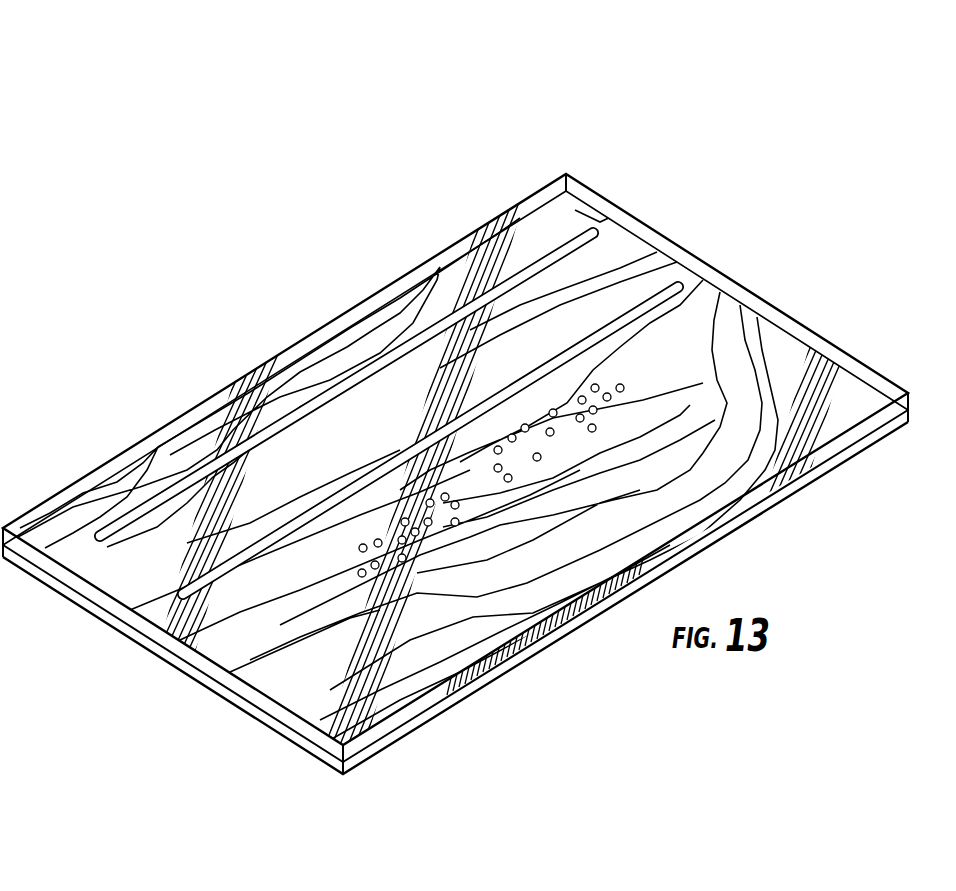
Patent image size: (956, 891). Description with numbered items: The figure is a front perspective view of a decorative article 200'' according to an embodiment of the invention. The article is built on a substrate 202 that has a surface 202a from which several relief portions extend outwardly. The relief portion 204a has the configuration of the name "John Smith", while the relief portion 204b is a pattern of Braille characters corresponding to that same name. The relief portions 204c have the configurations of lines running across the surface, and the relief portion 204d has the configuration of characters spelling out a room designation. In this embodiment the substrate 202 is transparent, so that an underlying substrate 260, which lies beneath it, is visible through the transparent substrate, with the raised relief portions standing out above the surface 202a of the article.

The decorative article 200'' is at (455, 403).
The substrate 202 is at (817, 345).
The surface 202a is at (766, 310).
The relief portion 204a is at (267, 494).
The relief portion 204b is at (362, 560).
The relief portions 204c is at (598, 330).
The relief portion 204d is at (642, 490).
The underlying substrate 260 is at (147, 652).